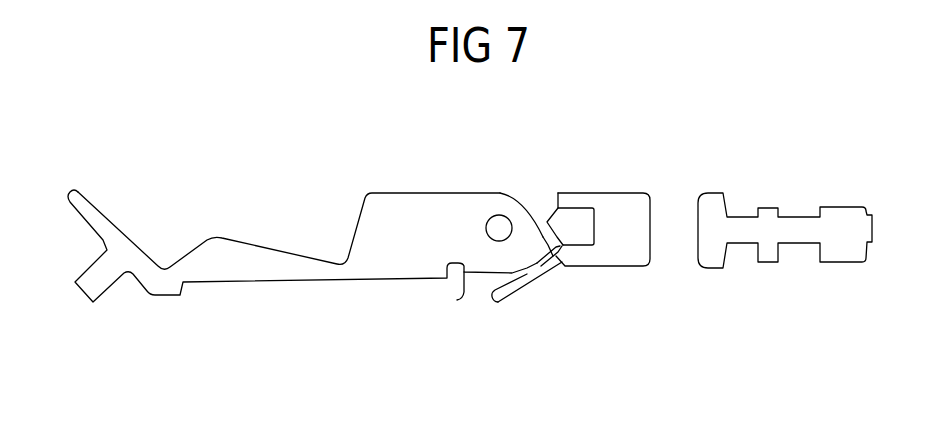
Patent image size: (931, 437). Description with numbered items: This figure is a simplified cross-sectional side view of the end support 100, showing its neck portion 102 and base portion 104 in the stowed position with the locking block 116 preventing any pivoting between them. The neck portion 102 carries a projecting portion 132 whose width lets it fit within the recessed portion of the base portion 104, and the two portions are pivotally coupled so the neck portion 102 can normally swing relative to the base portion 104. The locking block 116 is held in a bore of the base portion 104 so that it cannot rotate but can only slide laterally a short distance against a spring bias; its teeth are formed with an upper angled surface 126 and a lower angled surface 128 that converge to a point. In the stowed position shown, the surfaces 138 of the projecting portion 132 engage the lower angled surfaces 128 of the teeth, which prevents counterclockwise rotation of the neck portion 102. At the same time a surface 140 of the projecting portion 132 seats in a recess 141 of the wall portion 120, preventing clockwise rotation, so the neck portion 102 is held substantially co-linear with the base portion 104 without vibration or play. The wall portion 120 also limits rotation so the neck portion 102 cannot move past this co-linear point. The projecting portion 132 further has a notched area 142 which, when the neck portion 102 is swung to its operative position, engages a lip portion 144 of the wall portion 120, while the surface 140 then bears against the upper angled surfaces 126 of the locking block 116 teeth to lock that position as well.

The end support 100 is at (419, 146).
The neck portion 102 is at (298, 176).
The base portion 104 is at (631, 160).
The locking block 116 is at (608, 242).
The wall portion 120 is at (513, 288).
The upper angled surface 126 is at (550, 222).
The lower angled surface 128 is at (562, 266).
The projecting portion 132 is at (547, 225).
The surfaces 138 is at (575, 208).
The surface 140 is at (540, 267).
The recess 141 is at (530, 278).
The notched area 142 is at (460, 300).
The lip portion 144 is at (493, 300).